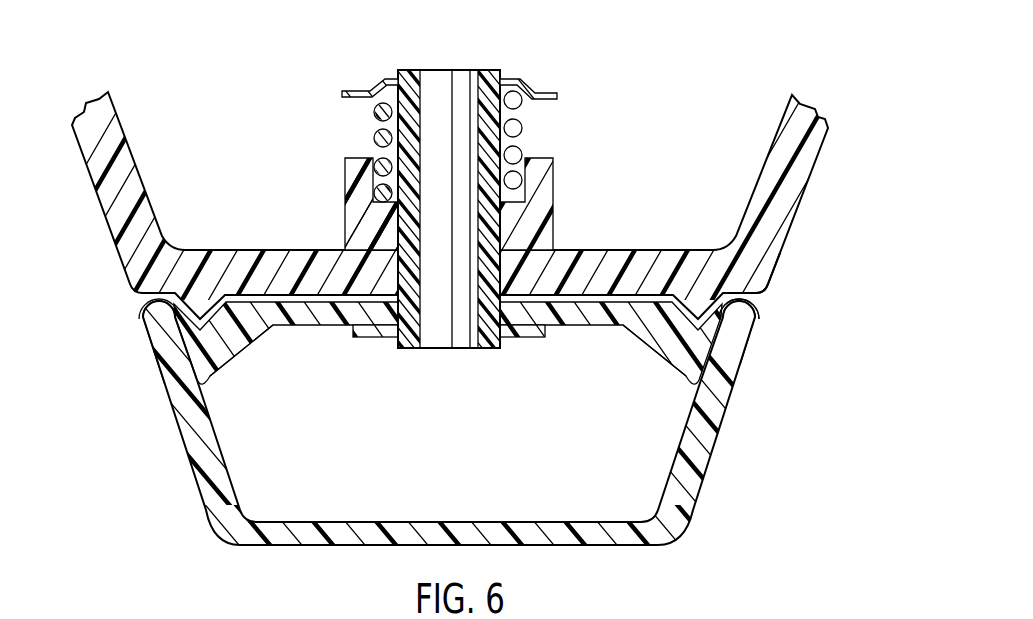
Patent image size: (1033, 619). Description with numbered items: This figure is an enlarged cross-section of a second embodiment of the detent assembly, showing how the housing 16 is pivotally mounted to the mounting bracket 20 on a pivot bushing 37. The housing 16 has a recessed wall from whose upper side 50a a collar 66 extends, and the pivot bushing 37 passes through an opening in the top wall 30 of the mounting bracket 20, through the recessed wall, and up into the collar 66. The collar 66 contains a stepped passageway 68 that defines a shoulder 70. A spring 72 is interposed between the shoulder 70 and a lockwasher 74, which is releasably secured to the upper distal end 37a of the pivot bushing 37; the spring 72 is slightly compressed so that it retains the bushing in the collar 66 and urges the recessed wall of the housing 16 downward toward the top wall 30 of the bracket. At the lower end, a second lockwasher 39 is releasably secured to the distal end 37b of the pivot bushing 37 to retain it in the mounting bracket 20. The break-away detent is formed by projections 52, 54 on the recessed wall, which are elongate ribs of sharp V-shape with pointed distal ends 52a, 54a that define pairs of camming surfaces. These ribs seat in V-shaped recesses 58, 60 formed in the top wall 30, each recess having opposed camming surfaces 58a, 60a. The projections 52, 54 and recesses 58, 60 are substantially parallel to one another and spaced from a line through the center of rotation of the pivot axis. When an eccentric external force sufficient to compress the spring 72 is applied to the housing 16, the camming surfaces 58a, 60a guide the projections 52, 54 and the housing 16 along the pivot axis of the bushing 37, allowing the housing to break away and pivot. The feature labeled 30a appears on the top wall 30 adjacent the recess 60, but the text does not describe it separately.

The housing 16 is at (812, 211).
The mounting bracket 20 is at (722, 476).
The top wall 30 is at (290, 328).
The gasket leg 30a is at (212, 338).
The pivot bushing 37 is at (490, 350).
The distal end 37a is at (490, 68).
The distal end 37b is at (447, 350).
The second lockwasher 39 is at (345, 338).
The upper side 50a is at (585, 272).
The projection 52 is at (665, 282).
The pointed distal end 52a is at (652, 328).
The projection 54 is at (143, 314).
The pointed distal end 54a is at (160, 356).
The recess 58 is at (745, 366).
The camming surface 58a is at (735, 304).
The recess 60 is at (173, 388).
The camming surface 60a is at (205, 272).
The collar 66 is at (345, 173).
The stepped passageway 68 is at (530, 225).
The shoulder 70 is at (374, 196).
The spring 72 is at (524, 190).
The lockwasher 74 is at (558, 93).